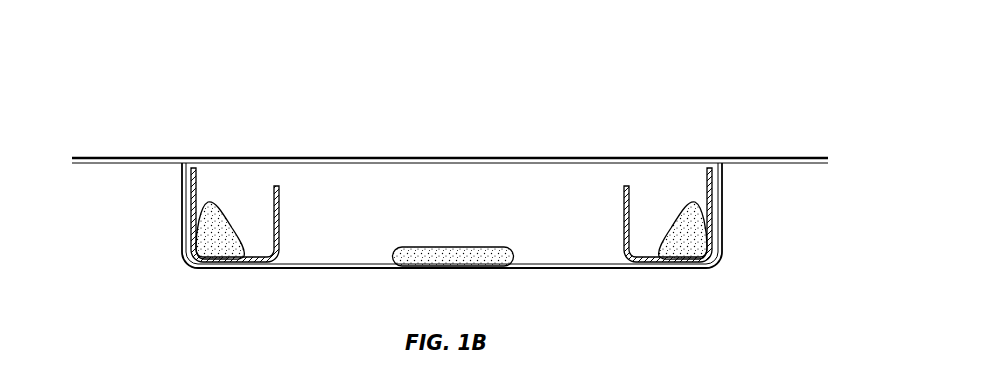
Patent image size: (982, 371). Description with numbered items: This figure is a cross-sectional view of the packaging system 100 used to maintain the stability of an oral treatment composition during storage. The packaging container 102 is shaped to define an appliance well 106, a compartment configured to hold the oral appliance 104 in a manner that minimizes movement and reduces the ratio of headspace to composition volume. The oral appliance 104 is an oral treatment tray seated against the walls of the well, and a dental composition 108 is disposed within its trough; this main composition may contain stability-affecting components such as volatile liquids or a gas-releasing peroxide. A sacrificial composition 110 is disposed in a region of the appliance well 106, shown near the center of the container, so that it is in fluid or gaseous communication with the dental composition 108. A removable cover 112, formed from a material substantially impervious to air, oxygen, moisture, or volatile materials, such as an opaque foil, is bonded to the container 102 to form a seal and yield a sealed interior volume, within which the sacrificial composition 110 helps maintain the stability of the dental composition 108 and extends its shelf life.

The packaging system 100 is at (176, 68).
The packaging container 102 is at (183, 230).
The oral appliance 104 is at (195, 172).
The appliance well 106 is at (362, 222).
The dental composition 108 is at (208, 242).
The sacrificial composition 110 is at (508, 260).
The removable cover 112 is at (575, 158).